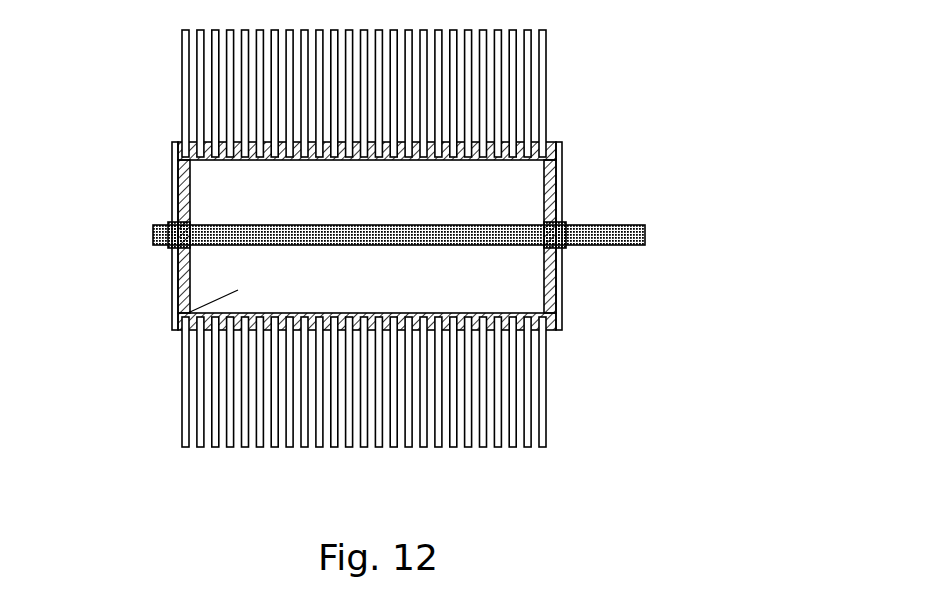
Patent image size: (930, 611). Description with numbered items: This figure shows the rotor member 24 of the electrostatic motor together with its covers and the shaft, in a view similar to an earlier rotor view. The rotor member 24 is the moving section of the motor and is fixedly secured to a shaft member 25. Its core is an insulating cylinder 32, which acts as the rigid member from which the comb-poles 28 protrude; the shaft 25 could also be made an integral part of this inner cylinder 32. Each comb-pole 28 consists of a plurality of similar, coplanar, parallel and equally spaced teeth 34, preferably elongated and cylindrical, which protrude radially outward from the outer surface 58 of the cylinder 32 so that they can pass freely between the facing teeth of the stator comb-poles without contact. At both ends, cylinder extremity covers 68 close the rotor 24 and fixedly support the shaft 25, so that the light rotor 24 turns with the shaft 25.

The rotor member 24 is at (557, 143).
The shaft member 25 is at (622, 246).
The rotor comb-pole 28 is at (547, 78).
The insulating cylinder 32 is at (173, 317).
The teeth 34 is at (517, 418).
The outer surface 58 is at (562, 335).
The cylinder extremity covers 68 is at (557, 193).